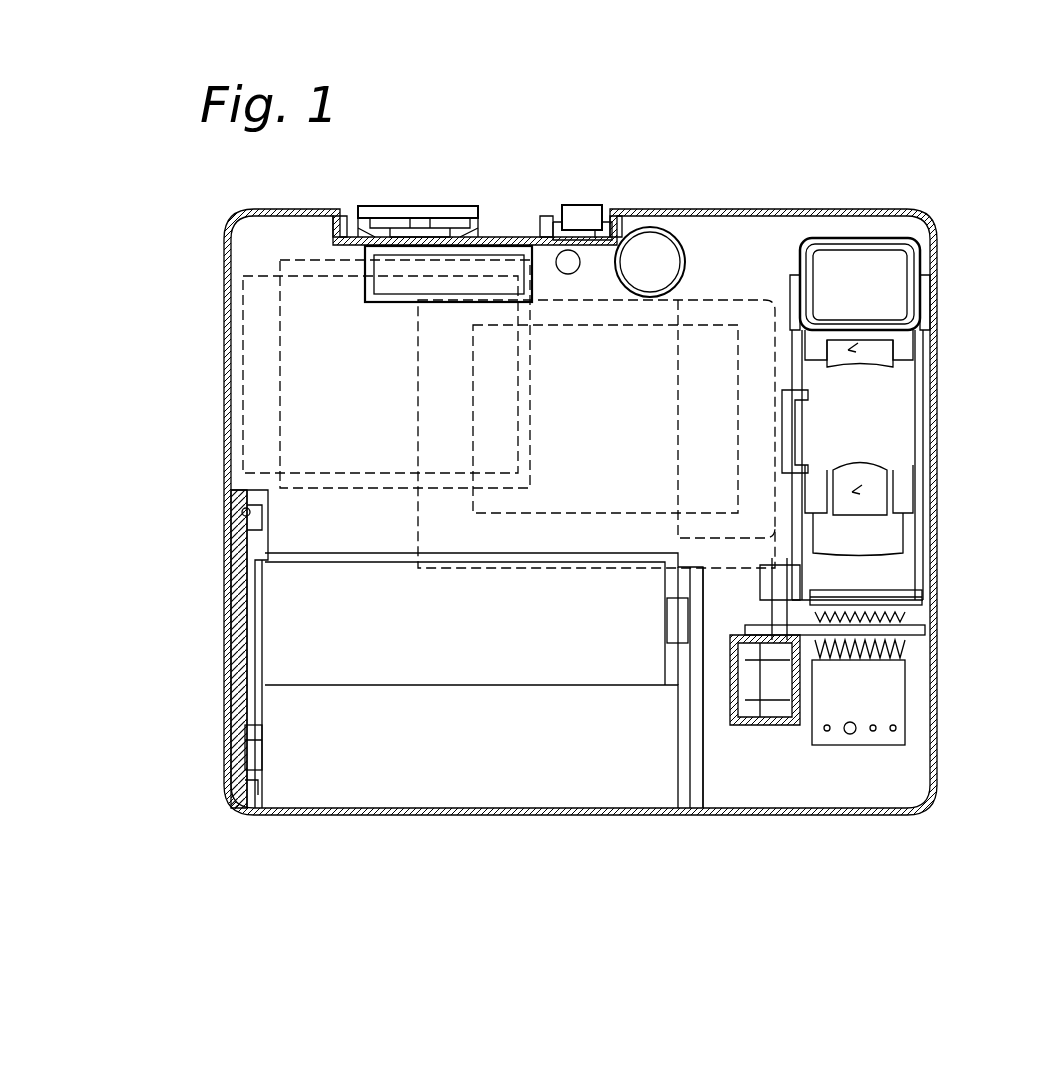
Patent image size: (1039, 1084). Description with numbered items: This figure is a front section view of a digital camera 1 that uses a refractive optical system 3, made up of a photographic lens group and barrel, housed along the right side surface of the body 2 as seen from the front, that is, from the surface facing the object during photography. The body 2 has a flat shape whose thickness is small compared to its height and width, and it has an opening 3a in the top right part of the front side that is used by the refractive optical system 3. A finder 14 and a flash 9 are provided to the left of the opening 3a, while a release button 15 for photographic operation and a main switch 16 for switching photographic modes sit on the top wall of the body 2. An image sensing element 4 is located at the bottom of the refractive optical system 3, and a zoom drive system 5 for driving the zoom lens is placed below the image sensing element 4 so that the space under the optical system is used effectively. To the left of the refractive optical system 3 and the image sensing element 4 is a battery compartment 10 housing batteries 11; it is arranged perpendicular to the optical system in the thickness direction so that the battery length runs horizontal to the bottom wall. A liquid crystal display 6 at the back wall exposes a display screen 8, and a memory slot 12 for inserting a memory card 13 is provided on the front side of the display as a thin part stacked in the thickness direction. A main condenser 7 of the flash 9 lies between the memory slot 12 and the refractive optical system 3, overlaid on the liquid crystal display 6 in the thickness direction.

The digital camera 1 is at (955, 192).
The body 2 is at (868, 214).
The refractive optical system 3 is at (905, 422).
The opening 3a is at (878, 285).
The image sensing element 4 is at (915, 598).
The zoom drive system 5 is at (960, 632).
The liquid crystal display 6 is at (753, 320).
The main condenser 7 is at (735, 265).
The display screen 8 is at (603, 345).
The flash 9 is at (490, 250).
The battery compartment 10 is at (697, 784).
The batteries 11 is at (415, 660).
The memory slot 12 is at (305, 430).
The memory card 13 is at (258, 326).
The finder 14 is at (652, 258).
The release button 15 is at (422, 207).
The main switch 16 is at (580, 204).